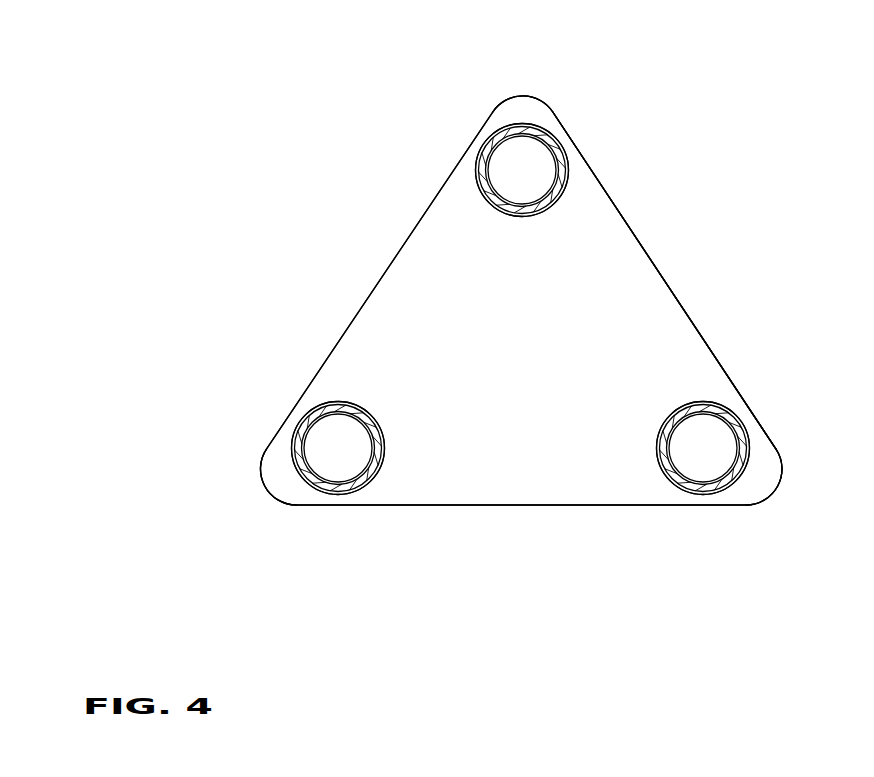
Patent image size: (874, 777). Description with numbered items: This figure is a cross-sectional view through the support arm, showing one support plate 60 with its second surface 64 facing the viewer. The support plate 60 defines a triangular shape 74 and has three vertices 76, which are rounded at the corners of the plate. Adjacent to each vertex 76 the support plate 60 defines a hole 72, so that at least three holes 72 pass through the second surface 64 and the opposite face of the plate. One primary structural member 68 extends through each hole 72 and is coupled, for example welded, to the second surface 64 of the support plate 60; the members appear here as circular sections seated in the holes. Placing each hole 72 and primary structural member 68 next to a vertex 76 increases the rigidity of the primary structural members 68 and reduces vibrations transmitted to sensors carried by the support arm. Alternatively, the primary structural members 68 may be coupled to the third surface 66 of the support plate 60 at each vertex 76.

The support plate 60 is at (697, 110).
The second surface 64 is at (450, 270).
The third surface 66 is at (712, 344).
The primary structural member 68 is at (482, 150).
The hole 72 is at (567, 184).
The triangular shape 74 is at (663, 268).
The vertex 76 is at (523, 92).